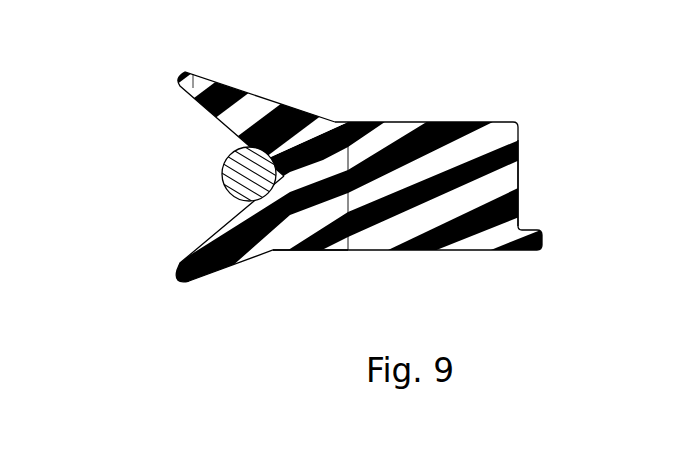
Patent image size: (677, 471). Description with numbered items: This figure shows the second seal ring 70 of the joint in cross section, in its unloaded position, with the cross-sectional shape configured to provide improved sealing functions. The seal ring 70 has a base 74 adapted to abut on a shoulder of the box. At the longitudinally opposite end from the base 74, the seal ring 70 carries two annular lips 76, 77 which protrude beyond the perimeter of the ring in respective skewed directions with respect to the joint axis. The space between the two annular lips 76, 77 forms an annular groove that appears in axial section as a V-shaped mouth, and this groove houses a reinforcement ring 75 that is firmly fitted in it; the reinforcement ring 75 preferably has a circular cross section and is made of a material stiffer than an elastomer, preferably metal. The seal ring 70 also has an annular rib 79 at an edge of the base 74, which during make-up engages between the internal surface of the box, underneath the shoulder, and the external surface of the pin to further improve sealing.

The second seal ring 70 is at (428, 136).
The base 74 is at (520, 166).
The reinforcement ring 75 is at (223, 169).
The annular lip 76 is at (248, 88).
The annular lip 77 is at (179, 272).
The annular rib 79 is at (532, 251).